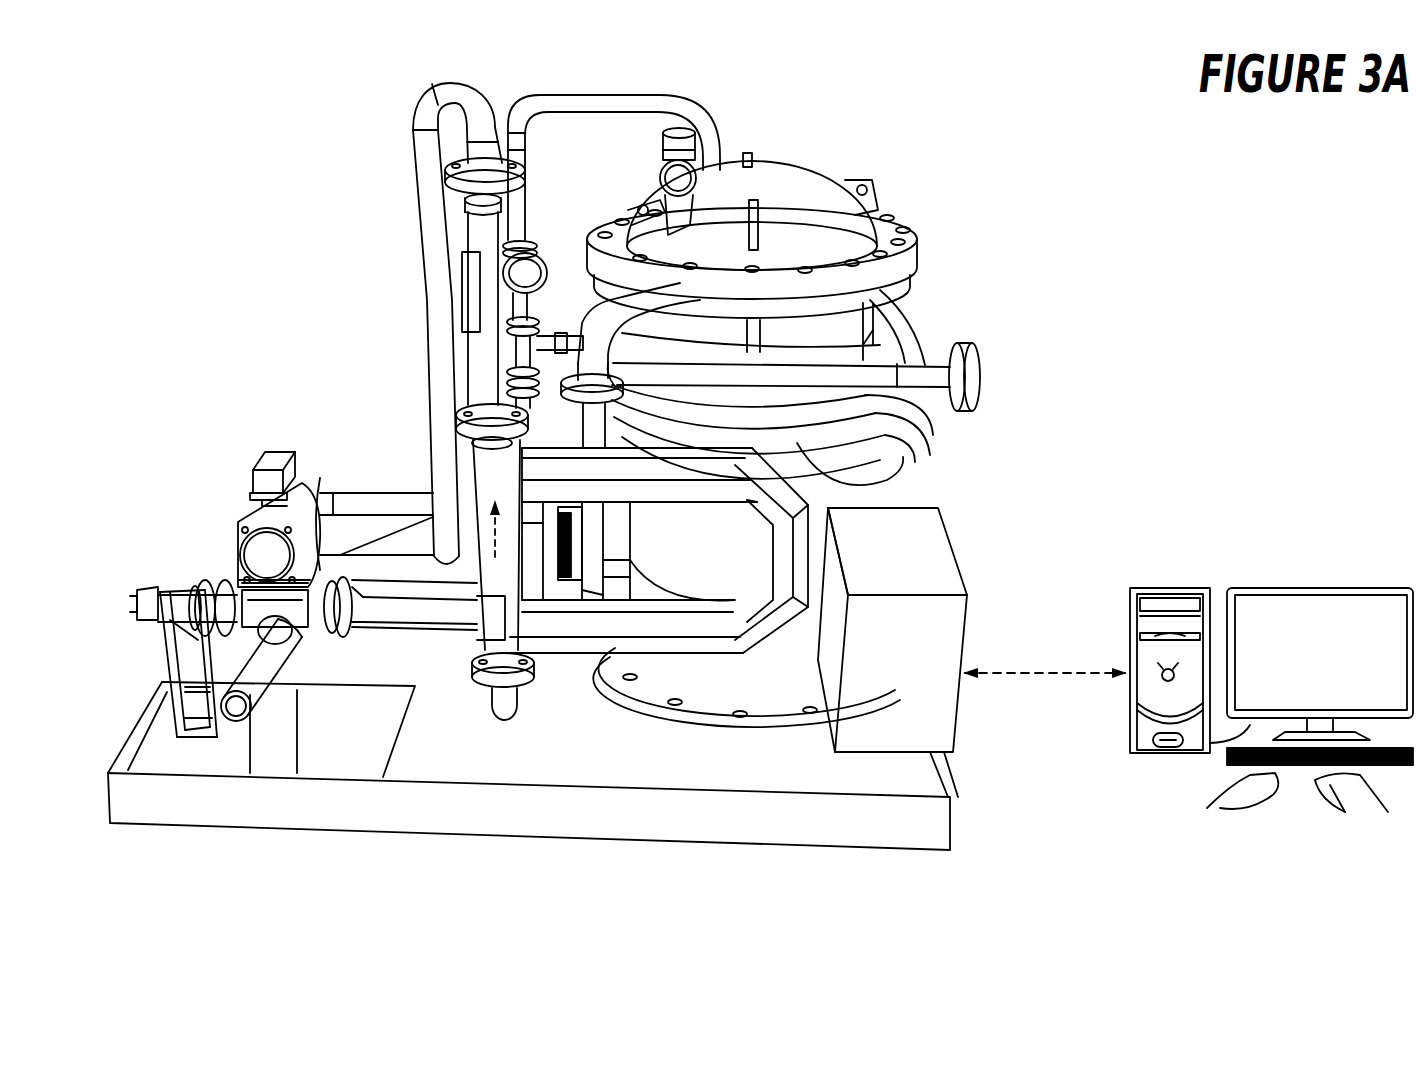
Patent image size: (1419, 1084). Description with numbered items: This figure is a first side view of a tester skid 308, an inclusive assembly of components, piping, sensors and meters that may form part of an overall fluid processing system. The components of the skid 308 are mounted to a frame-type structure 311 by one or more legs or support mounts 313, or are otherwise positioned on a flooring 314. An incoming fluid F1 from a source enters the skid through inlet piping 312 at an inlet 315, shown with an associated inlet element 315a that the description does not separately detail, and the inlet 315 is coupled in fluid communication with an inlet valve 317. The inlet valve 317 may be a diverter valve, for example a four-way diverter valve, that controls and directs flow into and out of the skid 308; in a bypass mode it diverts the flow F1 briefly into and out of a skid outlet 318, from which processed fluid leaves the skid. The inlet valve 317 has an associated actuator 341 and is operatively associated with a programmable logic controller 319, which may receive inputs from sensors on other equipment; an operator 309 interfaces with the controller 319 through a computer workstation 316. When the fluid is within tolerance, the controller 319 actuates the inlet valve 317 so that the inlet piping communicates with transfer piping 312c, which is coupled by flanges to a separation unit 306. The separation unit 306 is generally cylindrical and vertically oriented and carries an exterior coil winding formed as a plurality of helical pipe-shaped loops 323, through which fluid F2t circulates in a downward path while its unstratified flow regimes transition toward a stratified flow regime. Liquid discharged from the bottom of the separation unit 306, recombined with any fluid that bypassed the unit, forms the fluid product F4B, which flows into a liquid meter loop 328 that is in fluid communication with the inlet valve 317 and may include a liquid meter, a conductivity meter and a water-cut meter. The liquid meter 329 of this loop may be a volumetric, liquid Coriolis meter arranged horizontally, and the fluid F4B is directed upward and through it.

The separation unit 306 is at (805, 185).
The tester skid 308 is at (273, 212).
The operator 309 is at (1365, 792).
The frame-type structure 311 is at (523, 813).
The inlet pipe 312 is at (263, 670).
The transfer piping 312c is at (405, 612).
The legs or support mounts 313 is at (158, 645).
The flooring 314 is at (483, 767).
The inlet 315 is at (300, 640).
The pump bracket 315a is at (335, 580).
The computer workstation 316 is at (1169, 588).
The inlet valve 317 is at (315, 615).
The skid outlet 318 is at (137, 603).
The programmable logic controller 319 is at (935, 543).
The helical loops 323 is at (912, 420).
The liquid meter loop 328 is at (466, 365).
The liquid meter 329 is at (478, 630).
The actuator 341 is at (240, 540).
The incoming fluid F1 is at (237, 714).
The transitioning fluid F2t is at (690, 421).
The fluid product F4B is at (660, 625).